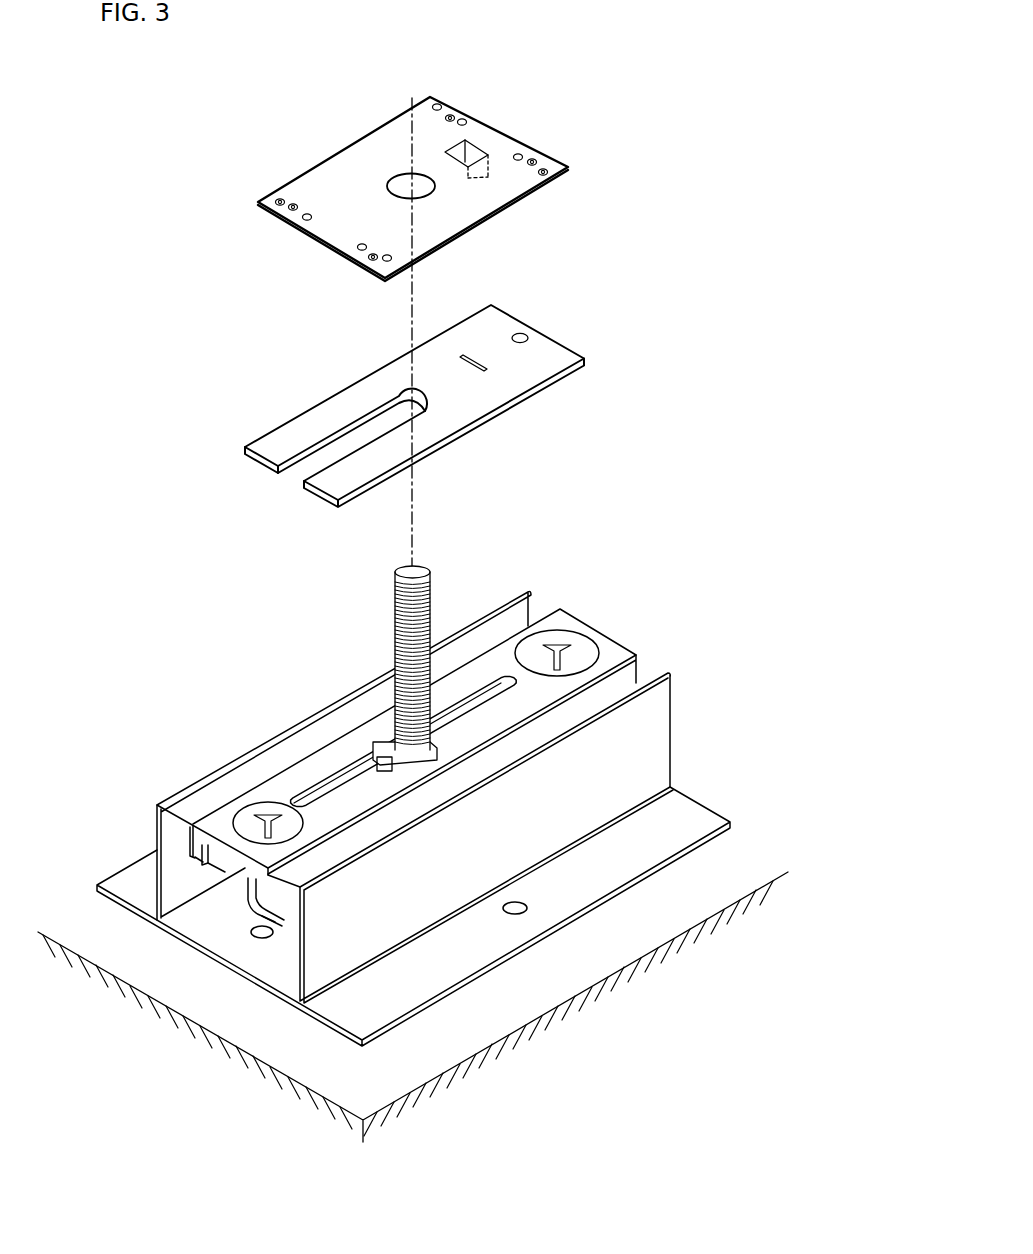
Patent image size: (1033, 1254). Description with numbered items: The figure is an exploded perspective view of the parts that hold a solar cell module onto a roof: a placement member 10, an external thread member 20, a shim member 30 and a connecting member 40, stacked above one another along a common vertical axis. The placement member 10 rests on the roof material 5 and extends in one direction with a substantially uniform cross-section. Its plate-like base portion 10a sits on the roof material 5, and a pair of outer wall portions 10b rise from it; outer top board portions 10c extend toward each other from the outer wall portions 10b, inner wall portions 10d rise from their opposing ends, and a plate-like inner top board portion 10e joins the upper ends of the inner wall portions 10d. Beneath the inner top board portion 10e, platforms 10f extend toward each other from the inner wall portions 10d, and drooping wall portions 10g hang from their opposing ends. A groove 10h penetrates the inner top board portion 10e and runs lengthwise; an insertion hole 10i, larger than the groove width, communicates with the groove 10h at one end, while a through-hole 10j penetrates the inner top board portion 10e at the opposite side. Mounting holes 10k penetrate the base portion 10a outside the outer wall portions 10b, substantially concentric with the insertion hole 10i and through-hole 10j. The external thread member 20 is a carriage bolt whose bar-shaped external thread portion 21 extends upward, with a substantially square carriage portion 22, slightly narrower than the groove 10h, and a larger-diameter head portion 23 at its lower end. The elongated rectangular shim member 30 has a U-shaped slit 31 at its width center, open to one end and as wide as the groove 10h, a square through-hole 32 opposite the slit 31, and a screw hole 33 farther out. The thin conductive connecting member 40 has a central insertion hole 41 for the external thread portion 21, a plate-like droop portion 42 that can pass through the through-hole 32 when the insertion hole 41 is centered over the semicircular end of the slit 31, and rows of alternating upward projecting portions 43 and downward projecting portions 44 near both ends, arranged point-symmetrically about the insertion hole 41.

The roof material 5 is at (473, 1027).
The placement member 10 is at (413, 835).
The base portion 10a is at (698, 812).
The outer wall portions 10b is at (522, 615).
The outer top board portions 10c is at (293, 913).
The inner wall portions 10d is at (180, 850).
The inner top board portion 10e is at (297, 776).
The platforms 10f is at (287, 912).
The drooping wall portions 10g is at (247, 897).
The groove 10h is at (477, 712).
The insertion hole 10i is at (597, 652).
The through-hole 10j is at (301, 832).
The mounting holes 10k is at (527, 910).
The external thread member 20 is at (390, 668).
The external thread portion 21 is at (432, 618).
The carriage portion 22 is at (388, 742).
The head portion 23 is at (385, 760).
The shim member 30 is at (462, 377).
The slit 31 is at (392, 418).
The through-hole 32 is at (487, 369).
The screw hole 33 is at (524, 335).
The connecting member 40 is at (469, 183).
The insertion hole 41 is at (397, 182).
The droop portion 42 is at (480, 177).
The upward projecting portions 43 is at (463, 120).
The downward projecting portions 44 is at (450, 118).